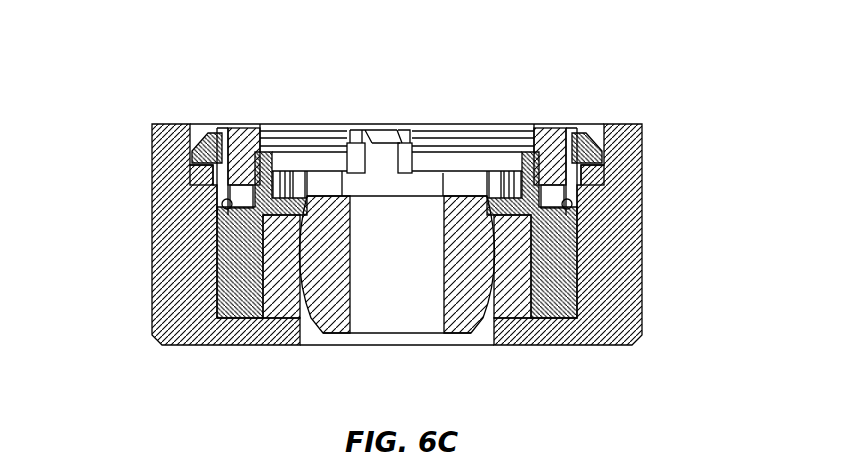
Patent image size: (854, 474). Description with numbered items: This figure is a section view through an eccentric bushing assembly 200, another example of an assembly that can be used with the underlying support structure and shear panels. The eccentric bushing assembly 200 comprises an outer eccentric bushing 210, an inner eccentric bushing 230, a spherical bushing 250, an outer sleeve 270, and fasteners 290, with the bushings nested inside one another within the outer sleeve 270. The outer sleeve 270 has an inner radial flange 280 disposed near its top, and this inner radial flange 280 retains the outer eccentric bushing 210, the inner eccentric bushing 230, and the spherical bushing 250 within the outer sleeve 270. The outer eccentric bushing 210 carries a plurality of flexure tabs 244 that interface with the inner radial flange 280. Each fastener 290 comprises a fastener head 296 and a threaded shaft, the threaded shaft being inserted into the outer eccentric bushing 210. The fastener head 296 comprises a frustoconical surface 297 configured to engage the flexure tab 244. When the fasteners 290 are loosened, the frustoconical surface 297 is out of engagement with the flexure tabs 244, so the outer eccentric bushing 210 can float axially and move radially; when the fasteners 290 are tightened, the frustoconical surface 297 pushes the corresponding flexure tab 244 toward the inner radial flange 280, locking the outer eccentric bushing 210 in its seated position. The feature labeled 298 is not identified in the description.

The eccentric bushing assembly 200 is at (308, 88).
The outer eccentric bushing 210 is at (556, 294).
The inner eccentric bushing 230 is at (288, 296).
The flexure tab 244 is at (606, 162).
The spherical bushing 250 is at (333, 336).
The outer sleeve 270 is at (175, 307).
The inner radial flange 280 is at (193, 126).
The fastener 290 is at (552, 136).
The fastener head 296 is at (240, 126).
The frustoconical surface 297 is at (605, 143).
The left pocket 298 is at (205, 167).